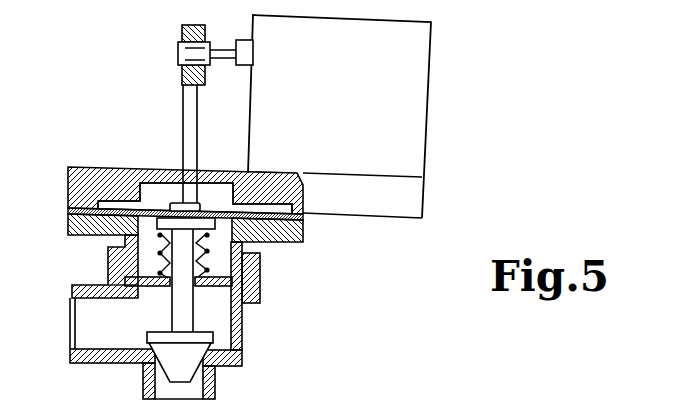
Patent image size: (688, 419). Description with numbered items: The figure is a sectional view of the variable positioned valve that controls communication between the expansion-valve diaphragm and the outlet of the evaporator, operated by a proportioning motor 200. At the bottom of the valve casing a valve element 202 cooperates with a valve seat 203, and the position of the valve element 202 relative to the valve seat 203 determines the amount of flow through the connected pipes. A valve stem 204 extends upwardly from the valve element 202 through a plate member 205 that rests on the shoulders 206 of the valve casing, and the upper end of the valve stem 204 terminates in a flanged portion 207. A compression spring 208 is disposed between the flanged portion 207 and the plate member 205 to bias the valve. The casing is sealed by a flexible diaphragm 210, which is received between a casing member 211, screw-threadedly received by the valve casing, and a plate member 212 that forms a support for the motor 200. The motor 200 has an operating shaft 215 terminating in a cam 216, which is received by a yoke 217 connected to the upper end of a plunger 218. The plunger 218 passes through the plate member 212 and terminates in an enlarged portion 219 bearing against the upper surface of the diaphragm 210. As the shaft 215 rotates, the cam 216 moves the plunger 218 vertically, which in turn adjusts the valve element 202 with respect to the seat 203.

The proportioning motor 200 is at (425, 113).
The valve element 202 is at (205, 345).
The valve seat 203 is at (148, 345).
The valve stem 204 is at (186, 316).
The plate member 205 is at (152, 291).
The shoulders 206 is at (261, 294).
The flanged portion 207 is at (240, 240).
The compression spring 208 is at (108, 263).
The flexible diaphragm 210 is at (68, 206).
The casing member 211 is at (67, 232).
The plate member 212 is at (102, 160).
The operating shaft 215 is at (226, 50).
The cam 216 is at (185, 55).
The yoke 217 is at (182, 77).
The plunger 218 is at (195, 130).
The enlarged portion 219 is at (175, 205).